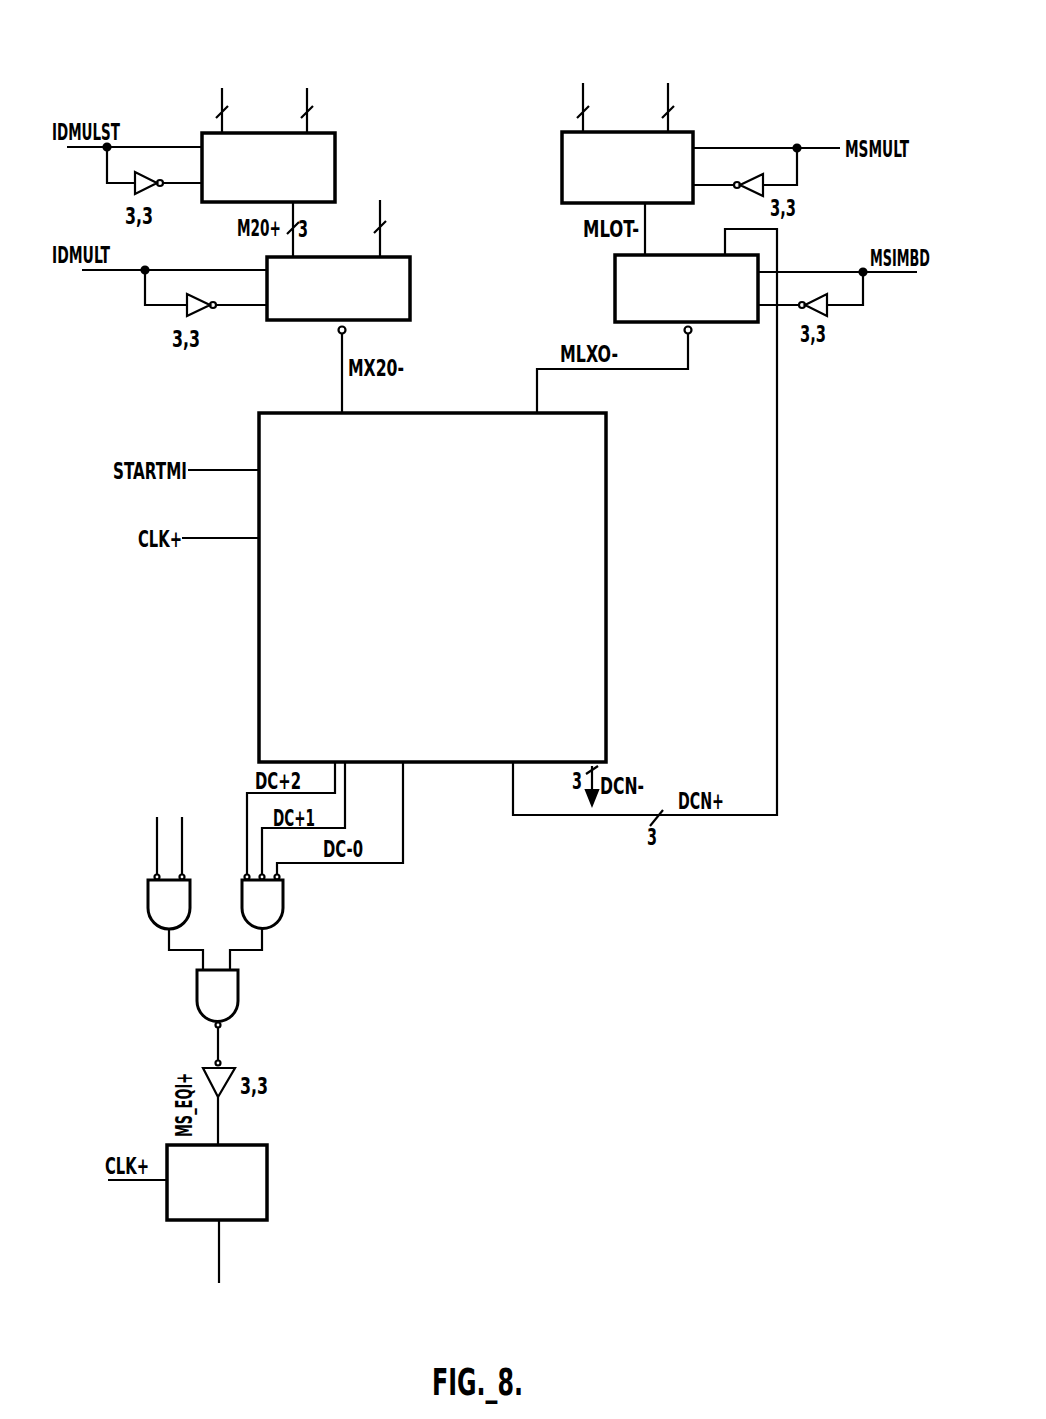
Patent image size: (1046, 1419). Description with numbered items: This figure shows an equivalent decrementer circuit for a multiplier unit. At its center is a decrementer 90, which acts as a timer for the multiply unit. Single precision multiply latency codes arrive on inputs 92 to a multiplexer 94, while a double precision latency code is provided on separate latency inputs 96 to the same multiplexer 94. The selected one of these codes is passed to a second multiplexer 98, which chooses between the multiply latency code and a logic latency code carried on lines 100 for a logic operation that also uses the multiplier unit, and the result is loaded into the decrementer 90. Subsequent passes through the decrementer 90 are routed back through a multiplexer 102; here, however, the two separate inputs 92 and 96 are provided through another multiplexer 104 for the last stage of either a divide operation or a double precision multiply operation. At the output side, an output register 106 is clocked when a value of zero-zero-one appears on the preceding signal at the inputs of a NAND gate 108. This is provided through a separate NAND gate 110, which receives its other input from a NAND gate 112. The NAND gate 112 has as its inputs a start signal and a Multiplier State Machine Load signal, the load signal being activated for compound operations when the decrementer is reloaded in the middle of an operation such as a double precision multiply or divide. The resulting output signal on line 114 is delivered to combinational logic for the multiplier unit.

The decrementer 90 is at (606, 447).
The inputs 92 is at (604, 98).
The multiplexer 94 is at (335, 137).
The latency inputs 96 is at (689, 98).
The second multiplexer 98 is at (410, 293).
The lines 100 is at (384, 213).
The multiplexer 102 is at (713, 322).
The multiplexer 104 is at (693, 136).
The output register 106 is at (267, 1153).
The NAND gate 108 is at (283, 890).
The NAND gate 110 is at (238, 985).
The NAND gate 112 is at (190, 890).
The output signal line 114 is at (222, 1250).